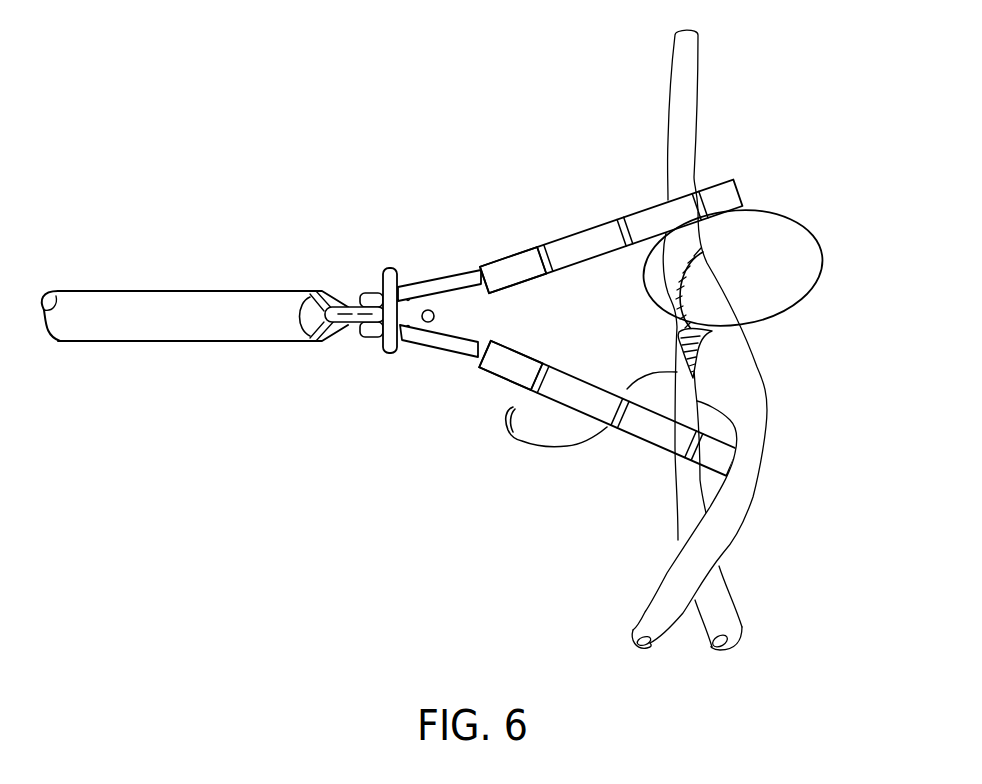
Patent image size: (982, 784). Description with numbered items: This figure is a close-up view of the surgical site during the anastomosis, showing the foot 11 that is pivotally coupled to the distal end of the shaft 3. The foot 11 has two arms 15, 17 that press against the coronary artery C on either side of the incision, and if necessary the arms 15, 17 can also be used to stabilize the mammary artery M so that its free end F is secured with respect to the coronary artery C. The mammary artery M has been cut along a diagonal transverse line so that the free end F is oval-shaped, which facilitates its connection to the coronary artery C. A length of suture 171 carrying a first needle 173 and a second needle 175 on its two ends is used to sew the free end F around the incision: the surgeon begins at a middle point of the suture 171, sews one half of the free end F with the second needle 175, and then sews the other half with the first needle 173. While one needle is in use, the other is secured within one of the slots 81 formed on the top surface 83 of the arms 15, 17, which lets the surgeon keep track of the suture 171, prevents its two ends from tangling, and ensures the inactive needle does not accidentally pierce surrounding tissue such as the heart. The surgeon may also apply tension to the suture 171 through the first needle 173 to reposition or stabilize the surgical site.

The shaft 3 is at (233, 290).
The foot 11 is at (543, 198).
The arm 15 is at (640, 441).
The arm 17 is at (608, 222).
The slot 81 is at (536, 394).
The top surface 83 is at (505, 272).
The suture 171 is at (823, 275).
The first needle 173 is at (512, 433).
The second needle 175 is at (708, 334).
The coronary artery C is at (698, 100).
The free end F is at (713, 262).
The mammary artery M is at (763, 458).